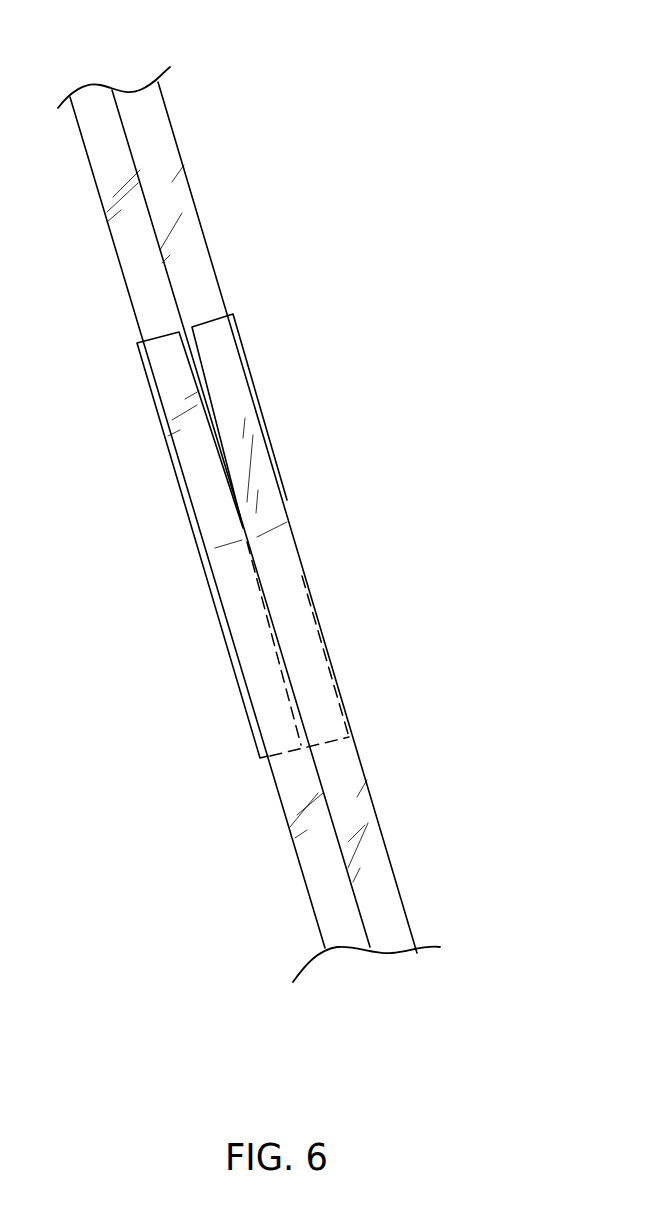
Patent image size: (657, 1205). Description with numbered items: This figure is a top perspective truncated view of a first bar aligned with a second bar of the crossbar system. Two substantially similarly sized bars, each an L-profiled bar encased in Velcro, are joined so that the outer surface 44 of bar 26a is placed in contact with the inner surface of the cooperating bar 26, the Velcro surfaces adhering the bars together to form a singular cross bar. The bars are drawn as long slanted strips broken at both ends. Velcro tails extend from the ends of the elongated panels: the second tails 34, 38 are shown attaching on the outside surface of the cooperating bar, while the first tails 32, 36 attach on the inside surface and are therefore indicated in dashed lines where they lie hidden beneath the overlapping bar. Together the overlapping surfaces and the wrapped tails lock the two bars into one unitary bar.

The bar 26 is at (380, 903).
The bar 26a is at (172, 128).
The outer surface 44 is at (193, 268).
The second tail 38 is at (168, 373).
The second tail 34 is at (217, 352).
The first tail 32 is at (302, 625).
The first tail 36 is at (255, 650).